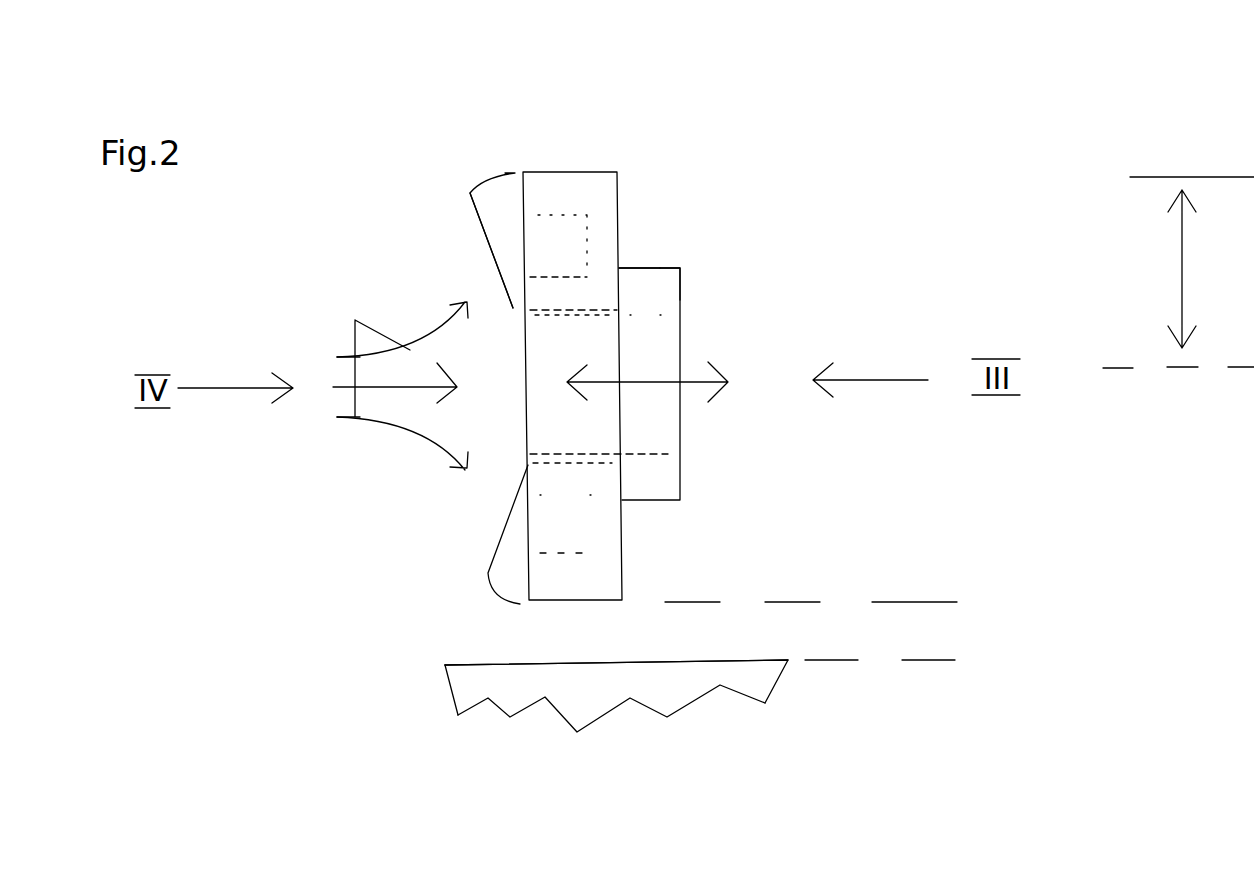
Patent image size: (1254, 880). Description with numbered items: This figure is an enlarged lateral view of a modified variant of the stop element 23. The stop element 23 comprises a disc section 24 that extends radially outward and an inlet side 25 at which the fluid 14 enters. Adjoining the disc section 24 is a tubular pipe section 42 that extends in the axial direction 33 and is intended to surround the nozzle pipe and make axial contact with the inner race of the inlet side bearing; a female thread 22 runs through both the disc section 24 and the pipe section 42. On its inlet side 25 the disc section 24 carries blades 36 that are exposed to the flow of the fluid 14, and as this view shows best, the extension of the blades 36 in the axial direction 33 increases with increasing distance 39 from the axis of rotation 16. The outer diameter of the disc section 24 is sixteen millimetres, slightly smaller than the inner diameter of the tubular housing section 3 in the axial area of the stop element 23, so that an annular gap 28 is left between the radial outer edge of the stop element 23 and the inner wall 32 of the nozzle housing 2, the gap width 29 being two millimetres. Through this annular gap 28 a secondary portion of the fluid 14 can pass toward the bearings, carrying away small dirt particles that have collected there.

The nozzle housing 2 is at (514, 754).
The tubular housing section 3 is at (520, 708).
The fluid 14 is at (368, 370).
The axis of rotation 16 is at (1127, 388).
The female thread 22 is at (681, 302).
The stop element 23 is at (694, 250).
The disc section 24 is at (569, 172).
The inlet side 25 is at (484, 274).
The annular gap 28 is at (570, 641).
The gap width 29 is at (918, 580).
The inner wall 32 is at (655, 676).
The axial direction 33 is at (683, 396).
The blades 36 is at (501, 153).
The distance 39 is at (1156, 273).
The pipe section 42 is at (651, 259).